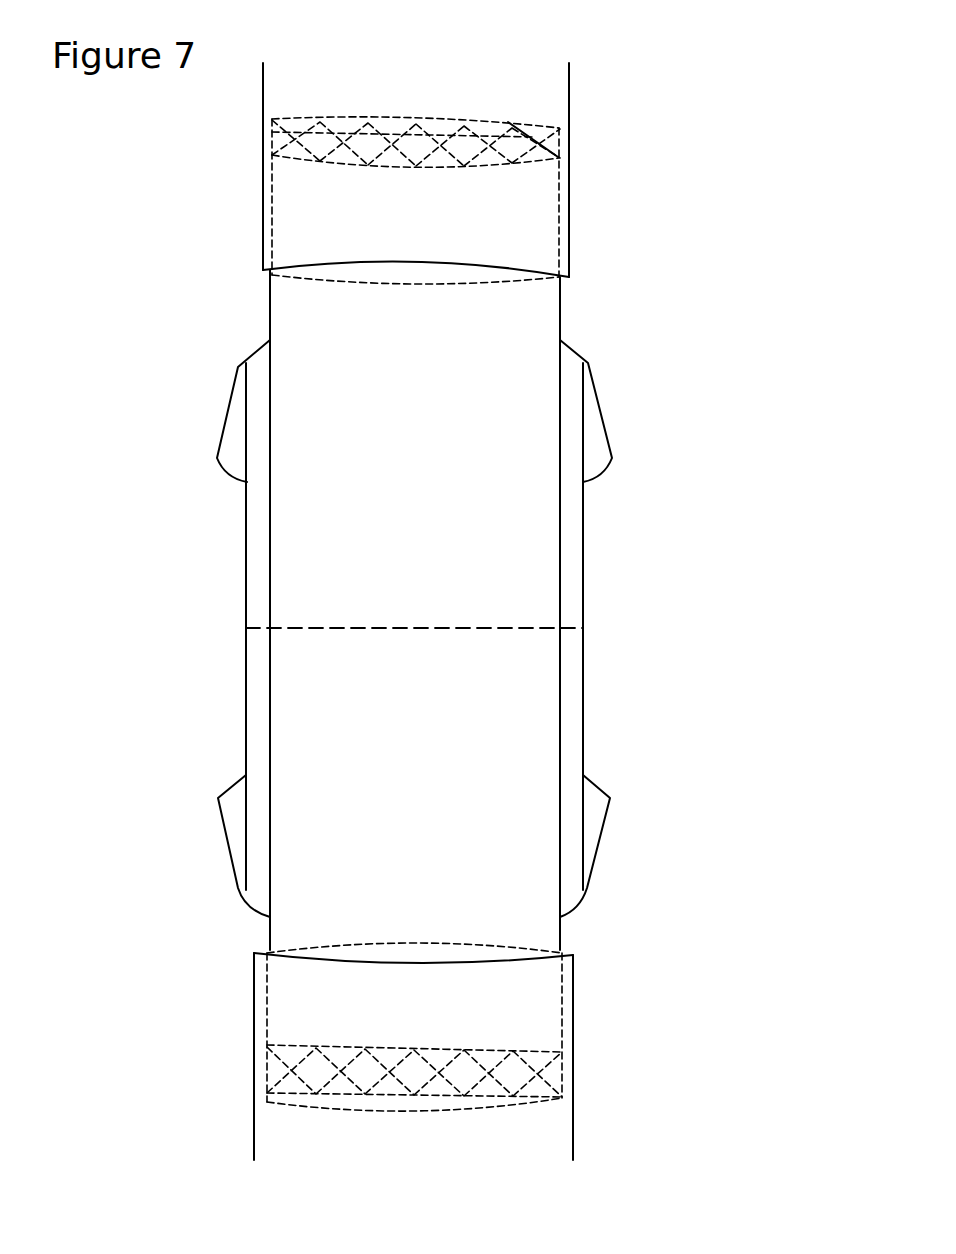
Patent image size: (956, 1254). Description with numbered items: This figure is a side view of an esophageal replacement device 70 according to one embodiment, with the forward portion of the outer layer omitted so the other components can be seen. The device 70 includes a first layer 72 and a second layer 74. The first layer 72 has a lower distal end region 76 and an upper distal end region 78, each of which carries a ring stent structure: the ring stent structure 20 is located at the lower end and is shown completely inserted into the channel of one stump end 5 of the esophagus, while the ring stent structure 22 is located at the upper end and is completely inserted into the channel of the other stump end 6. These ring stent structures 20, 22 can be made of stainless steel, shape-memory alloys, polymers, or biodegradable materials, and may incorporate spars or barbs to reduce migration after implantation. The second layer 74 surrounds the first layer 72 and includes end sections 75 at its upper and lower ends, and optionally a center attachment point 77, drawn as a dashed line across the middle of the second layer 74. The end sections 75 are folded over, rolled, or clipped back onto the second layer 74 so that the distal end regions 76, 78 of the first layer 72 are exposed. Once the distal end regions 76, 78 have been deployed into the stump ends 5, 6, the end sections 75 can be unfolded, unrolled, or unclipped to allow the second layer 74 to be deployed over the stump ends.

The device 70 is at (752, 145).
The stump end 6 is at (569, 100).
The first layer 72 is at (560, 298).
The ring stent structure 22 is at (559, 143).
The distal end region 78 is at (433, 117).
The second layer 74 is at (583, 533).
The end section 75 is at (235, 430).
The center attachment point 77 is at (503, 628).
The stump end 5 is at (573, 1137).
The ring stent structure 20 is at (566, 1080).
The distal end region 76 is at (463, 1098).